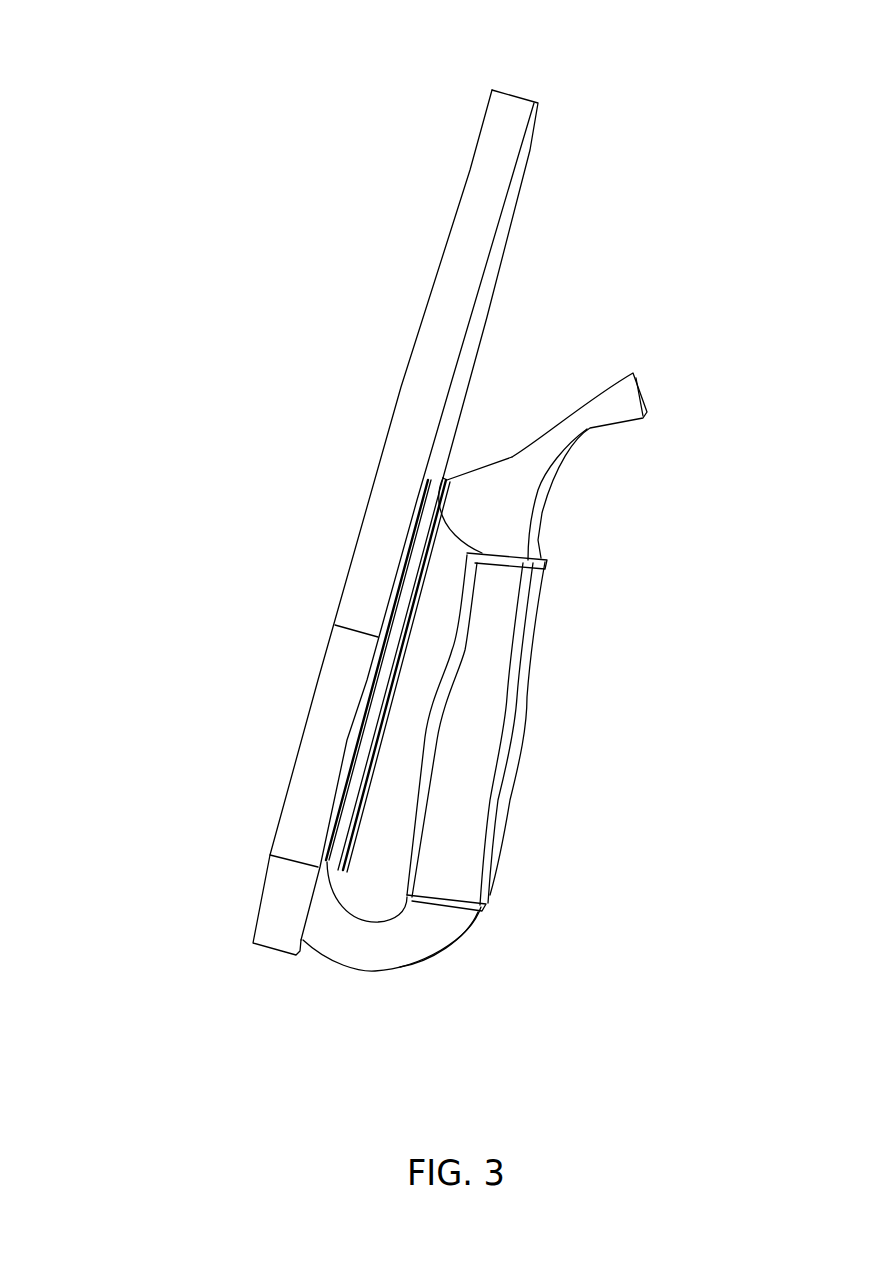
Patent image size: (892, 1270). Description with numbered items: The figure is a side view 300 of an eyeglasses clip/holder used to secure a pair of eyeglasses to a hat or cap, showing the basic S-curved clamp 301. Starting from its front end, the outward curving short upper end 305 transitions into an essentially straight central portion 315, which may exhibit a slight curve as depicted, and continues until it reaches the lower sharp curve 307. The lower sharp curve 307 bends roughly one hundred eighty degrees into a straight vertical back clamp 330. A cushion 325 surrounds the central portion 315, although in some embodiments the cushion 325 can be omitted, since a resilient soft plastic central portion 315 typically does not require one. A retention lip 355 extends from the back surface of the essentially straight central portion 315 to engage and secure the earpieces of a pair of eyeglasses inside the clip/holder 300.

The side view of the eyeglasses clip/holder 300 is at (307, 145).
The S-curved clamp 301 is at (378, 453).
The short curving upper end 305 is at (622, 375).
The lower sharp curve 307 is at (350, 910).
The central portion 315 is at (462, 803).
The cushion 325 is at (520, 742).
The straight vertical back clamp 330 is at (350, 655).
The retention lip 355 is at (472, 495).